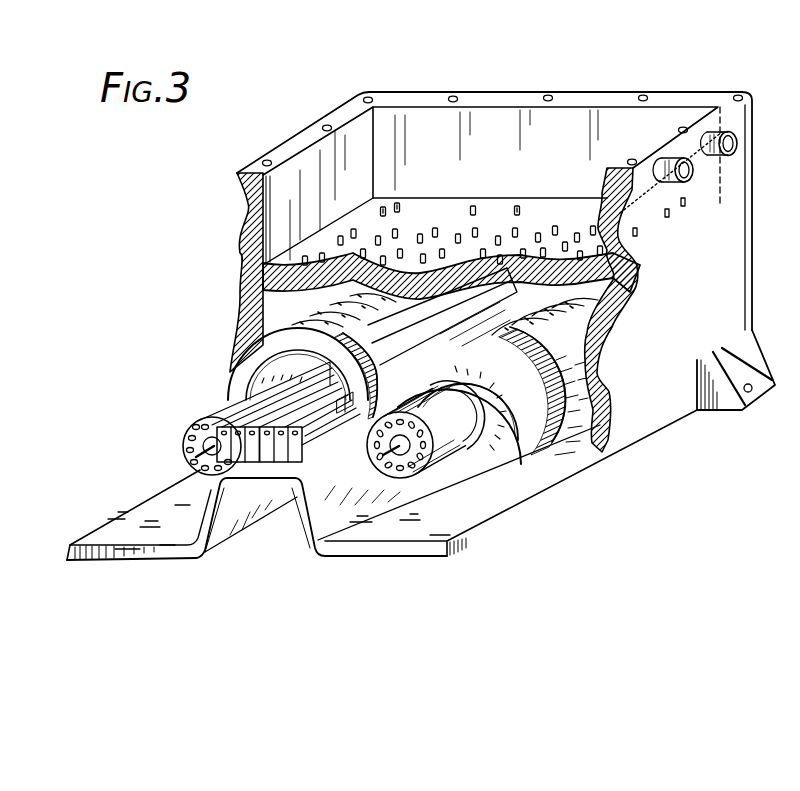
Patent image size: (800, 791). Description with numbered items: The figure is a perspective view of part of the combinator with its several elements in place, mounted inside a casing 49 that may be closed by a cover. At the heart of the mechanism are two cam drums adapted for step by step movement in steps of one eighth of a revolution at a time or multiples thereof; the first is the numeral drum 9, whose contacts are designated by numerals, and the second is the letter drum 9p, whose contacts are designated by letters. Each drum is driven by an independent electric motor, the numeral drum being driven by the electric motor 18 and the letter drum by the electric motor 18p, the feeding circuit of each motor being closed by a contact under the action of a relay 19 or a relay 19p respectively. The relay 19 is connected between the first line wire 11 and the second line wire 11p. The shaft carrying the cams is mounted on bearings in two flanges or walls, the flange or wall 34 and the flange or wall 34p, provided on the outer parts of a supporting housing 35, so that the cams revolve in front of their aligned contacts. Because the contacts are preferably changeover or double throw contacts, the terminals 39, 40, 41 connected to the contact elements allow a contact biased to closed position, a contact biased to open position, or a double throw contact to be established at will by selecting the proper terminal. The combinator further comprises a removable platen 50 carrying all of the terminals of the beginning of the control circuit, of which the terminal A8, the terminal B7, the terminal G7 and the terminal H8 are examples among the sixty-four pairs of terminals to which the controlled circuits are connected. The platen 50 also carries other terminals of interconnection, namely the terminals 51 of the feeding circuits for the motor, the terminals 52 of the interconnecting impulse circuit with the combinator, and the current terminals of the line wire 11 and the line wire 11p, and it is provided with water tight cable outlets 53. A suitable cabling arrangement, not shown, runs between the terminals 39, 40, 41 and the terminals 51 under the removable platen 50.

The cam drum 9 is at (380, 302).
The cam drum 9p is at (543, 335).
The line wire 11 is at (385, 205).
The line wire 11p is at (400, 202).
The electric motor 18 is at (195, 425).
The electric motor 18p is at (432, 473).
The relay 19 is at (223, 455).
The relay 19p is at (295, 453).
The flange or wall 34 is at (240, 372).
The flange or wall 34p is at (518, 453).
The supporting housing 35 is at (568, 427).
The terminal 39 is at (465, 312).
The terminal 40 is at (609, 296).
The terminal 41 is at (545, 348).
The casing 49 is at (665, 412).
The platen 50 is at (578, 207).
The terminals of the feeding circuits for the motor 51 is at (518, 205).
The terminals of the interconnecting impulse circuit 52 is at (669, 213).
The water tight cable outlet 53 is at (738, 135).
The terminal A8 is at (640, 238).
The terminal B7 is at (565, 241).
The terminal G7 is at (415, 268).
The terminal H8 is at (353, 228).